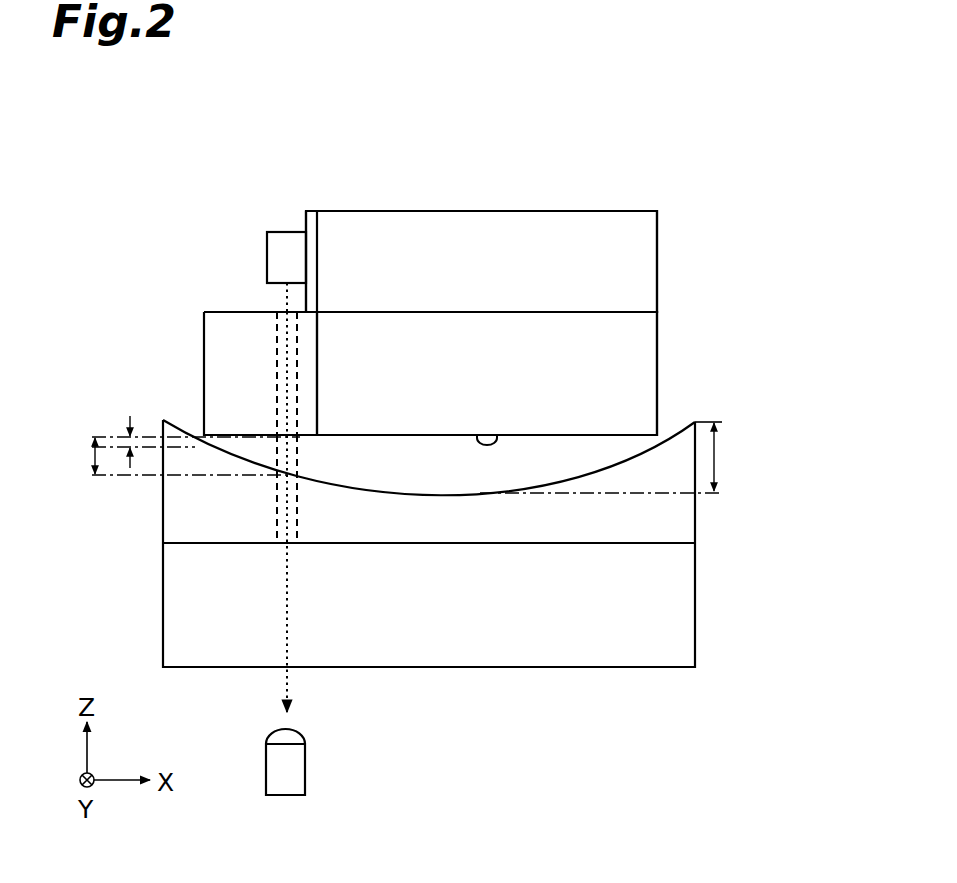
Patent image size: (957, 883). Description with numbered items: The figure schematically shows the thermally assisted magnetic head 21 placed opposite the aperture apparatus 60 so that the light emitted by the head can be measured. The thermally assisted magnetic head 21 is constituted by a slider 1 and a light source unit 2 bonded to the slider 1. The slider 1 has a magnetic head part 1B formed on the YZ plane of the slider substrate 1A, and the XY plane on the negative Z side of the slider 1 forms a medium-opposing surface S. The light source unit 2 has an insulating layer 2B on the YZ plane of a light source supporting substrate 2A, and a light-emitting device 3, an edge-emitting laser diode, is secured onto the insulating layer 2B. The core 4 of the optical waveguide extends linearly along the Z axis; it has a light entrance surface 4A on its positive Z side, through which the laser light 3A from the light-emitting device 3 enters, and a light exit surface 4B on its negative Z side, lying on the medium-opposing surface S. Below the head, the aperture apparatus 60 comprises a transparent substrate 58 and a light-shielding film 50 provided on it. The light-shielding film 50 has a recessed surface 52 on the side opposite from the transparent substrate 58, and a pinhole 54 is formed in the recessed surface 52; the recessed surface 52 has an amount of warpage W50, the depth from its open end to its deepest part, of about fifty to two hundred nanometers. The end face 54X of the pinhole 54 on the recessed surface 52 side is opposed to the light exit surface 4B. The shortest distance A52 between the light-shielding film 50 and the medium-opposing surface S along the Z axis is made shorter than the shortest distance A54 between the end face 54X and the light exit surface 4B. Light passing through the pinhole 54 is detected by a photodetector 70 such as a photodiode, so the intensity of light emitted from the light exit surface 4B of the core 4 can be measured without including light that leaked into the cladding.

The thermally assisted magnetic head 21 is at (634, 143).
The slider 1 is at (533, 152).
The slider substrate 1A is at (510, 327).
The magnetic head part 1B is at (308, 348).
The light source unit 2 is at (393, 152).
The light source supporting substrate 2A is at (377, 220).
The insulating layer 2B is at (313, 210).
The light-emitting device 3 is at (283, 238).
The laser light 3A is at (286, 290).
The core 4 is at (277, 363).
The light entrance surface 4A is at (279, 309).
The light exit surface 4B is at (290, 440).
The medium-opposing surface S is at (495, 435).
The recessed surface 52 is at (542, 480).
The pinhole 54 is at (297, 510).
The end face 54X is at (292, 468).
The light-shielding film 50 is at (683, 517).
The transparent substrate 58 is at (683, 617).
The aperture apparatus 60 is at (762, 500).
The photodetector 70 is at (300, 772).
The shortest distance A52 is at (127, 438).
The shortest distance A54 is at (69, 456).
The amount of warpage W50 is at (739, 456).